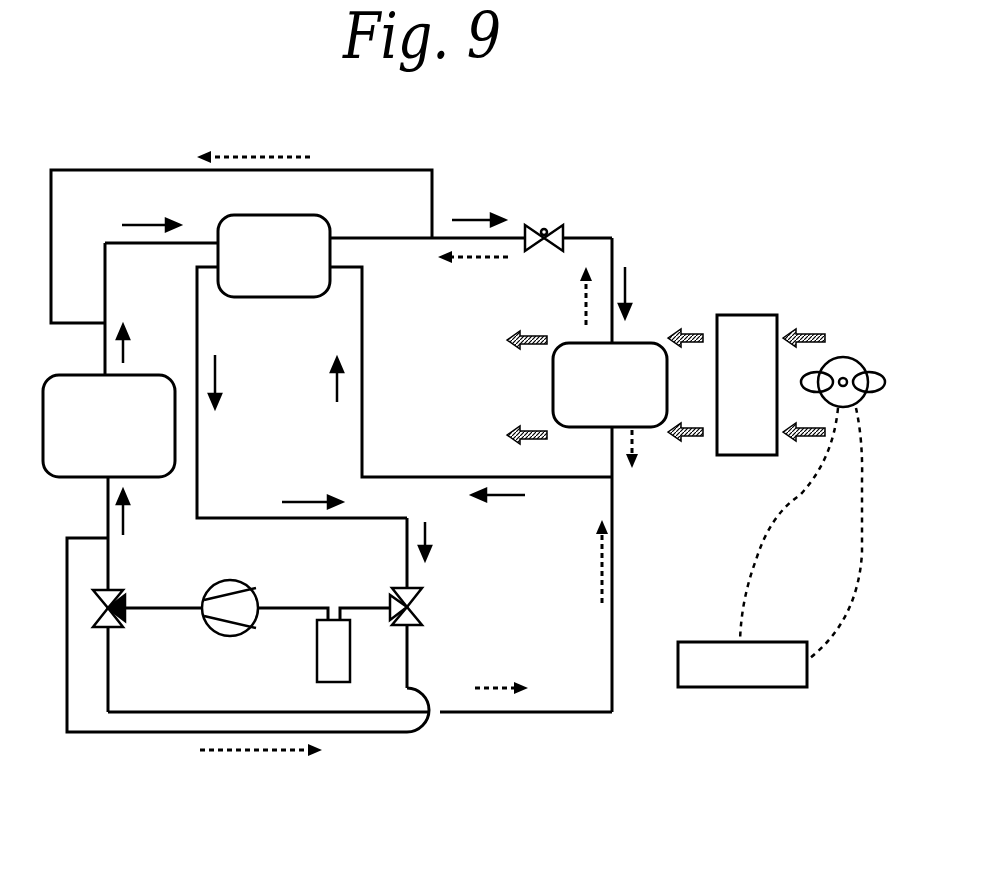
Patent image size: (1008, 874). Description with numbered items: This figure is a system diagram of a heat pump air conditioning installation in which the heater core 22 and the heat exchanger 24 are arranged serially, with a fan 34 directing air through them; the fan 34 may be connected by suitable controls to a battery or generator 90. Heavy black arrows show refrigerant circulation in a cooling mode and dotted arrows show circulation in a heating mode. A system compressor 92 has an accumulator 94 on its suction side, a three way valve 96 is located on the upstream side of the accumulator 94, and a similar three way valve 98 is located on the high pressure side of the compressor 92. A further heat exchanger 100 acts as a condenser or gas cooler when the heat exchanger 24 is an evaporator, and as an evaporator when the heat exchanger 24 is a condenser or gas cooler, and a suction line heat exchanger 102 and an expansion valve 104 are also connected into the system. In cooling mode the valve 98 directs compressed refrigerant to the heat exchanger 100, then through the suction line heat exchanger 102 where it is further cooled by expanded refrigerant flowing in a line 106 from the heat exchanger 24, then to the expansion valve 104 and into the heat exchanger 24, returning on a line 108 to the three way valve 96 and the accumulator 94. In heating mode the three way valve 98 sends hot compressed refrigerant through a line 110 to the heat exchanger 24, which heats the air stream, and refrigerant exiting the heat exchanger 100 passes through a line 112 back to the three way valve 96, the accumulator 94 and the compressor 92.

The heater core 22 is at (747, 385).
The heat exchanger 24 is at (610, 385).
The fan 34 is at (850, 358).
The battery or generator 90 is at (770, 547).
The system compressor 92 is at (250, 586).
The accumulator 94 is at (317, 656).
The three way valve 96 is at (415, 590).
The three way valve 98 is at (113, 597).
The heat exchanger 100 is at (109, 426).
The suction line heat exchanger 102 is at (274, 256).
The expansion valve 104 is at (546, 226).
The line 106 is at (362, 326).
The line 108 is at (197, 452).
The line 110 is at (455, 714).
The line 112 is at (100, 735).